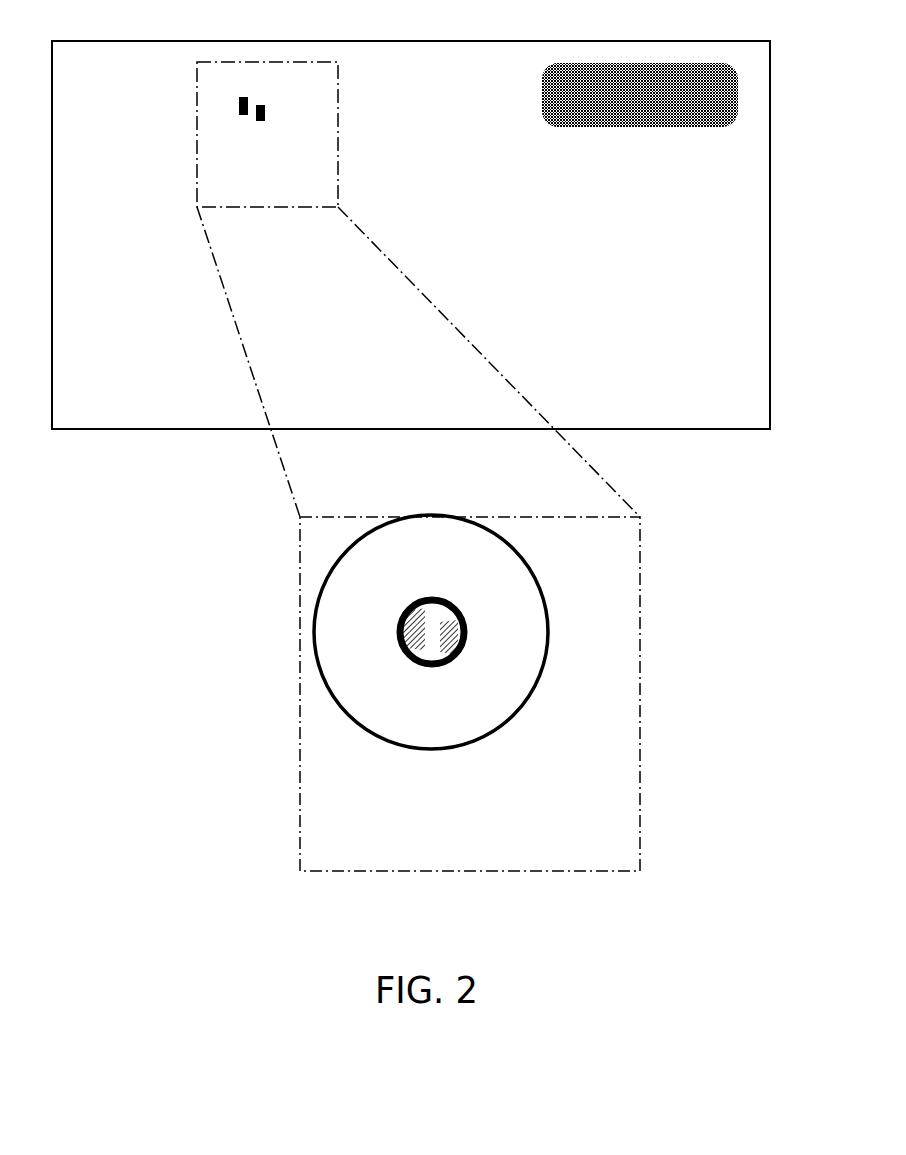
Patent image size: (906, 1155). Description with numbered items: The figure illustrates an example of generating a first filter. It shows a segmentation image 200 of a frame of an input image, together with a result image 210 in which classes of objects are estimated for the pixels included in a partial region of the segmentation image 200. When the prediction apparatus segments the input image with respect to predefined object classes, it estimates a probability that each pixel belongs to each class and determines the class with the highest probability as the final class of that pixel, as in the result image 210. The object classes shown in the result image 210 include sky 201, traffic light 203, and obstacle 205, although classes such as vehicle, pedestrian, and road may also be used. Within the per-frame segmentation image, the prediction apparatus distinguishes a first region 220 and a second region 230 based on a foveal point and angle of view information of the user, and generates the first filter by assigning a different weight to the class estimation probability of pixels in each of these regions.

The segmentation image 200 is at (661, 40).
The sky 201 is at (390, 570).
The traffic light 203 is at (398, 621).
The obstacle 205 is at (475, 705).
The result image 210 is at (641, 553).
The first region 220 is at (432, 598).
The second region 230 is at (512, 548).